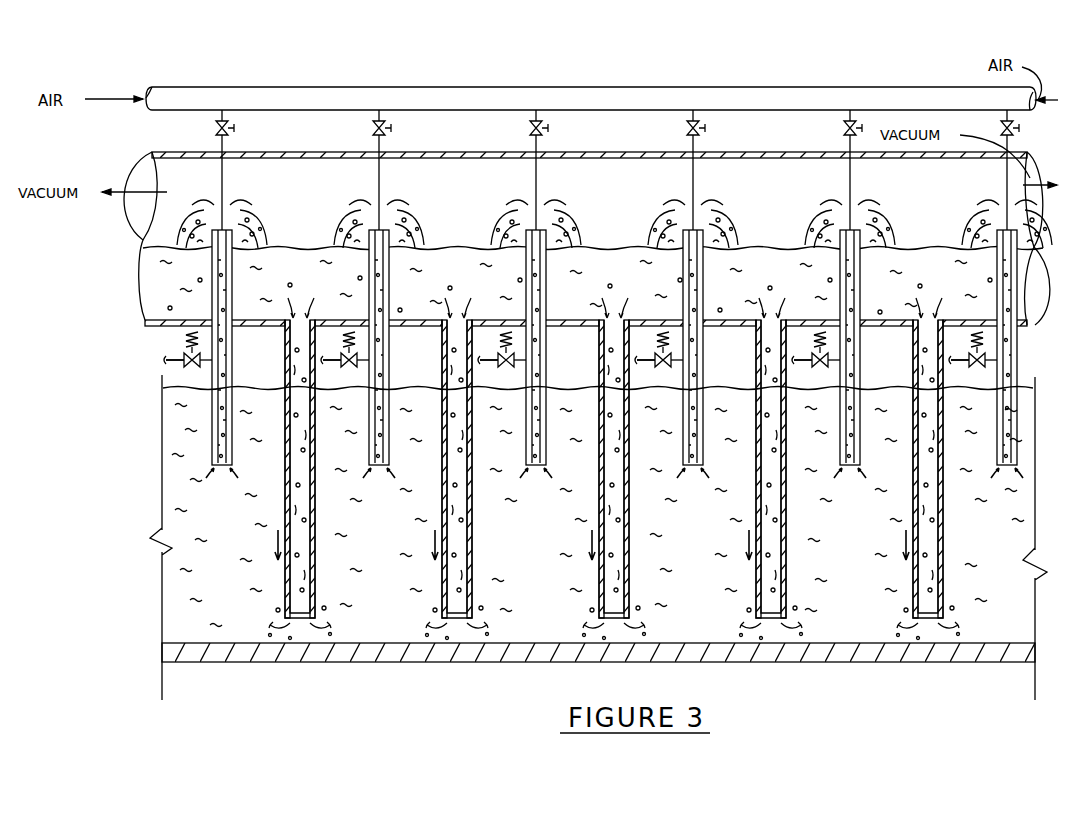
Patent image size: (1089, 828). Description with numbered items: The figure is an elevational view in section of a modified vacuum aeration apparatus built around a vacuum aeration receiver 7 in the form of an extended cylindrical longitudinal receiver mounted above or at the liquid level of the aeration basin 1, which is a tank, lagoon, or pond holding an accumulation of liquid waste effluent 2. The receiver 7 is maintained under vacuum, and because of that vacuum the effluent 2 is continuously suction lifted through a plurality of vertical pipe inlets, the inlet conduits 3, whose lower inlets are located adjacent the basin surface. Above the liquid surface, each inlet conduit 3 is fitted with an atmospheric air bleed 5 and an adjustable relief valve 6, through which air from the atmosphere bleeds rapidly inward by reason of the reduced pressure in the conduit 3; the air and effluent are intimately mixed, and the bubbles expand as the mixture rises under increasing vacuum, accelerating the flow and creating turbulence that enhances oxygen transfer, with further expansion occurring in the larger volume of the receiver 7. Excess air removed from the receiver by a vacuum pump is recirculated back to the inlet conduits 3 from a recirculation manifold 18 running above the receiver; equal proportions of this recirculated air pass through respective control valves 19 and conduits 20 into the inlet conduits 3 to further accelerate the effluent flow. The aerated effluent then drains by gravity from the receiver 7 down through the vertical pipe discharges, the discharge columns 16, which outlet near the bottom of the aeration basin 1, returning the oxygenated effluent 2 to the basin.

The aeration basin 1 is at (160, 570).
The liquid waste effluent 2 is at (176, 443).
The inlet conduit 3 is at (232, 370).
The atmospheric air bleed 5 is at (168, 362).
The adjustable relief valve 6 is at (182, 352).
The vacuum aeration receiver 7 is at (153, 153).
The discharge column 16 is at (472, 563).
The recirculation manifold 18 is at (519, 87).
The control valve 19 is at (550, 129).
The conduit 20 is at (533, 119).